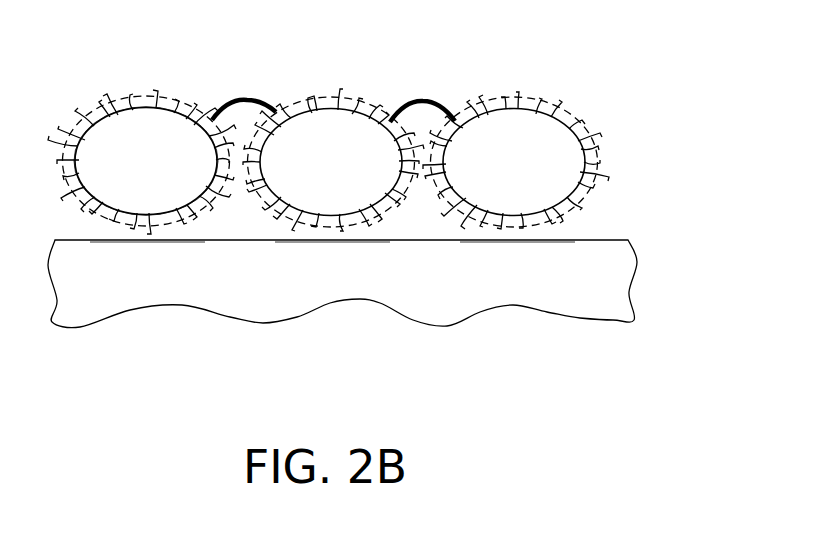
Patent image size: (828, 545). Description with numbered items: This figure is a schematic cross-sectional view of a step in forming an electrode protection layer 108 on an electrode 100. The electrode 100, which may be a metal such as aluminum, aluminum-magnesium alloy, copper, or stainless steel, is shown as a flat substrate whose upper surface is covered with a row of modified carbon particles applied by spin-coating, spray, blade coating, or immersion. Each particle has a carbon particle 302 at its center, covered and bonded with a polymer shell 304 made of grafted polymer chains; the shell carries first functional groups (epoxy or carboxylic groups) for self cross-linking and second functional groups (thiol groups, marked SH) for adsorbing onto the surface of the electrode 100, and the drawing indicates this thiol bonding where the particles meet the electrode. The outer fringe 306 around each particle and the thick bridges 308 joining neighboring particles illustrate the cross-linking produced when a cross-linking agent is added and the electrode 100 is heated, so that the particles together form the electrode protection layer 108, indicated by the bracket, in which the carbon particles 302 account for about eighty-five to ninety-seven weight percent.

The electrode 100 is at (603, 275).
The electrode protection layer 108 is at (379, 142).
The carbon particle 302 is at (160, 122).
The polymer shell 304 is at (195, 110).
The surface hair layer 306 is at (92, 98).
The connecting bridge 308 is at (244, 100).
The shadow region SH is at (338, 228).